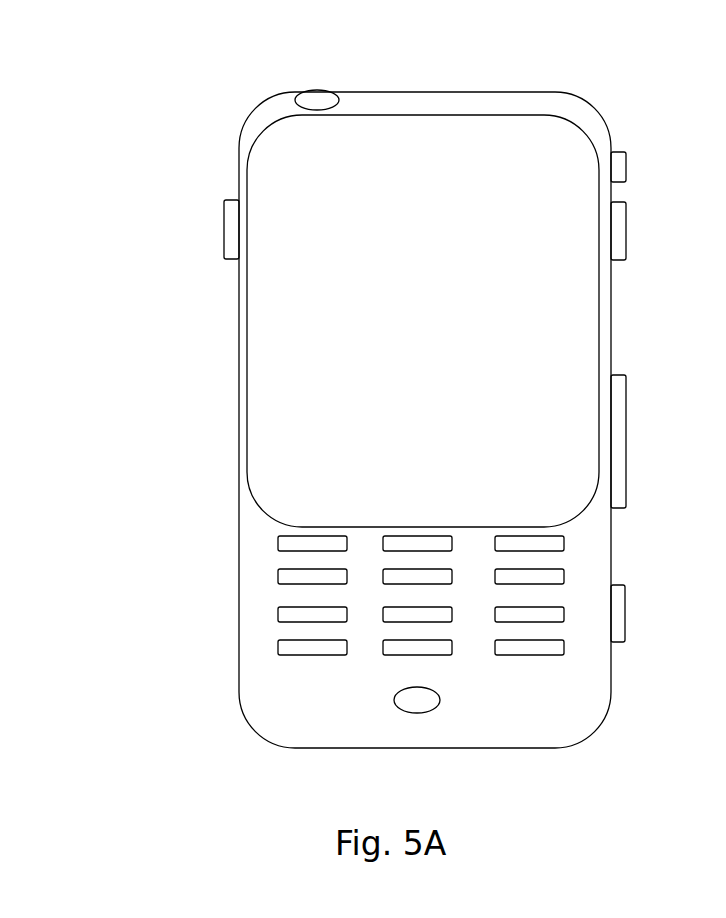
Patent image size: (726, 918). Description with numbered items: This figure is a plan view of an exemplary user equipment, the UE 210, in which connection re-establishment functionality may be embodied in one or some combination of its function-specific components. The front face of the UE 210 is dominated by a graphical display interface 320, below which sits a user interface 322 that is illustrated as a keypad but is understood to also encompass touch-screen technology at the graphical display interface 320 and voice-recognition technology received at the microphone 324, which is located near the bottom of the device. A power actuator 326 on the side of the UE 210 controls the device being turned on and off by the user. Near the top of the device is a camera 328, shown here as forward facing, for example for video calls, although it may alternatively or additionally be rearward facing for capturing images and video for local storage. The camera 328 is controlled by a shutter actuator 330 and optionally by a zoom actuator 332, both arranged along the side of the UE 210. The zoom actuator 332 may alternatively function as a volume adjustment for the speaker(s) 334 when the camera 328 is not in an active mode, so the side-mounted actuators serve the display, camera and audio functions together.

The user equipment 210 is at (212, 116).
The graphical display interface 320 is at (313, 300).
The user interface 322 is at (239, 576).
The microphone 324 is at (411, 708).
The power actuator 326 is at (626, 165).
The camera 328 is at (314, 86).
The shutter actuator 330 is at (626, 590).
The zoom actuator 332 is at (626, 397).
The speaker 334 is at (626, 212).